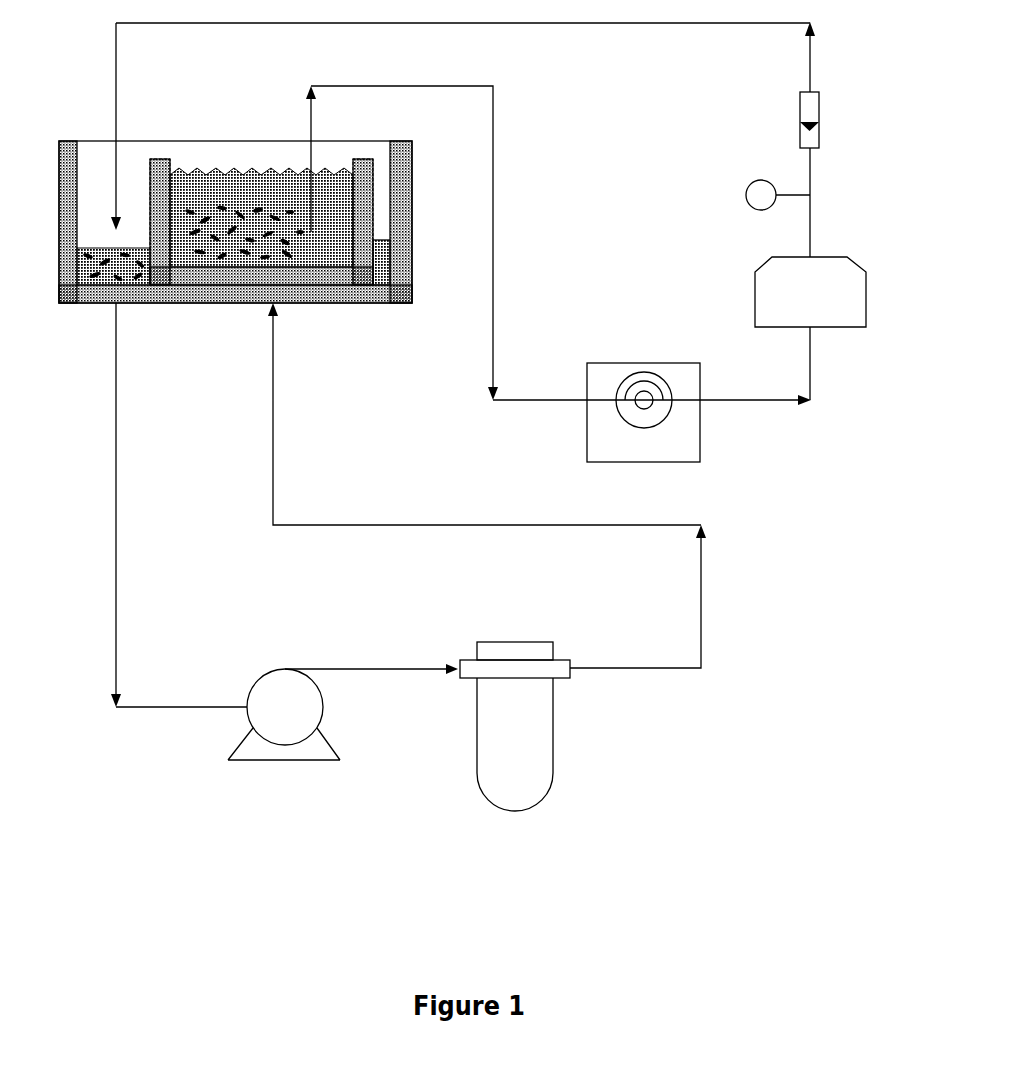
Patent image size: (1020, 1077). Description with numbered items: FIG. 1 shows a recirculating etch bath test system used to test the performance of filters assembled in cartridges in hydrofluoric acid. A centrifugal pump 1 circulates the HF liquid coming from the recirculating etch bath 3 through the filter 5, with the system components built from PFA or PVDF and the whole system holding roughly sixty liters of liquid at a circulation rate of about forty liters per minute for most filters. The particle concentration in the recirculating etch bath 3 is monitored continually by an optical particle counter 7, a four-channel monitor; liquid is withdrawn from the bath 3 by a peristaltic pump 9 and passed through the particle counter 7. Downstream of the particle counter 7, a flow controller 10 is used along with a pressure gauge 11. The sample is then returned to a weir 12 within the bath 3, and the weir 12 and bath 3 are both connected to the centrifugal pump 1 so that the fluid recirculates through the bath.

The centrifugal pump 1 is at (282, 747).
The recirculating etch bath 3 is at (223, 193).
The filter 5 is at (512, 746).
The optical particle counter 7 is at (825, 302).
The peristaltic pump 9 is at (672, 447).
The flow controller 10 is at (819, 127).
The pressure gauge 11 is at (746, 195).
The weir 12 is at (120, 269).